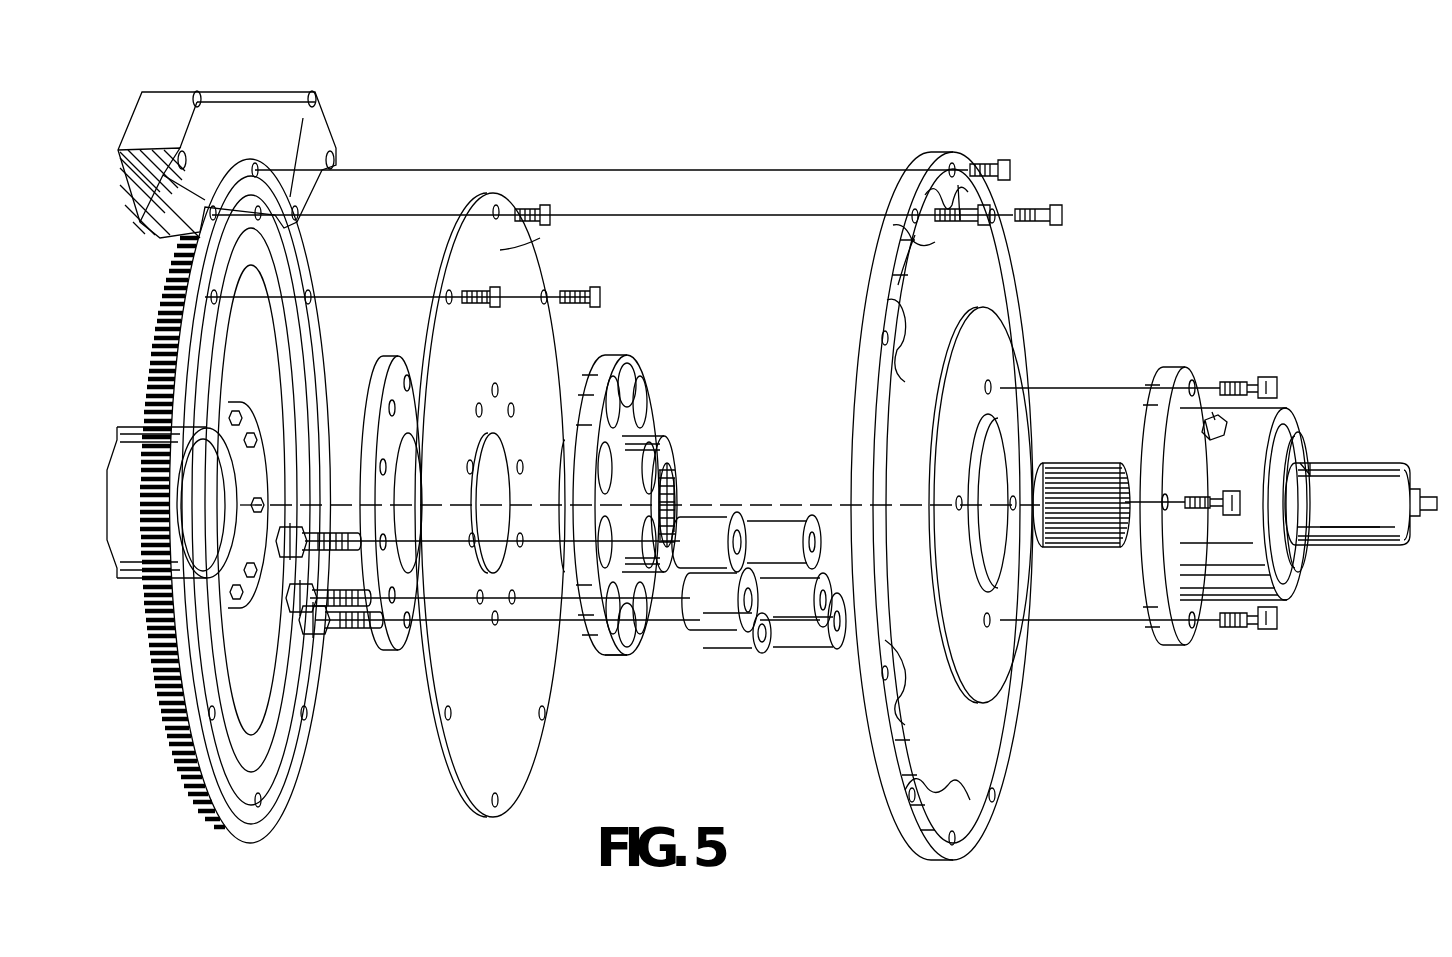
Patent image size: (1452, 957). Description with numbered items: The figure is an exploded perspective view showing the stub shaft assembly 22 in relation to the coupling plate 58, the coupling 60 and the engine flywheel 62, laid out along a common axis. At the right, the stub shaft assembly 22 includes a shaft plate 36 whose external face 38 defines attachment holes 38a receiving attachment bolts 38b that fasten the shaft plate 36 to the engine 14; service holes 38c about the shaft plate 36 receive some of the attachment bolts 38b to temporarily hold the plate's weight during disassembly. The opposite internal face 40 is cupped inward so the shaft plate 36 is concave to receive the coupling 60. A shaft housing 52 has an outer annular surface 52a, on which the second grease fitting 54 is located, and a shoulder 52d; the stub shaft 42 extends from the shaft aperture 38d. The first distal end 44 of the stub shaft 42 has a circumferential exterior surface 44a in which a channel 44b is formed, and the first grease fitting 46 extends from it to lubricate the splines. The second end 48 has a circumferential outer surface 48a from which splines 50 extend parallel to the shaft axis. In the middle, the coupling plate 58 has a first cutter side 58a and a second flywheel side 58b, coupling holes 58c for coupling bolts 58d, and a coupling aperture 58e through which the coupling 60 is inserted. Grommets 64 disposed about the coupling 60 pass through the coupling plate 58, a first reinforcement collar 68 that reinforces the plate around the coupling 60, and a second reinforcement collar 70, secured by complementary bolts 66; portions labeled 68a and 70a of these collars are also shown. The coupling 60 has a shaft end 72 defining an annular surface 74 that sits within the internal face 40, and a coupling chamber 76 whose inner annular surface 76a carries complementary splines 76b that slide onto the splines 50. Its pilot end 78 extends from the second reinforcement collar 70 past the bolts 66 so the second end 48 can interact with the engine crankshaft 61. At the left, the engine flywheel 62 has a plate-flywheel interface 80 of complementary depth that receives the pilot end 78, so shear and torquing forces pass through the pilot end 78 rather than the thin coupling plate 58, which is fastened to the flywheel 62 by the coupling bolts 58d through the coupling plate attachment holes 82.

The engine 14 is at (232, 112).
The stub shaft assembly 22 is at (1114, 484).
The shaft plate 36 is at (970, 276).
The external face 38 is at (944, 484).
The attachment holes 38a is at (955, 165).
The attachment bolts 38b is at (1000, 170).
The service holes 38c is at (888, 338).
The shaft aperture 38d is at (988, 545).
The internal face 40 is at (868, 800).
The stub shaft 42 is at (1361, 501).
The first distal end 44 is at (1361, 482).
The circumferential exterior surface 44a is at (1348, 520).
The channel 44b is at (1308, 465).
The first grease fitting 46 is at (1430, 512).
The second end 48 is at (1082, 493).
The circumferential outer surface 48a is at (1100, 450).
The splines 50 is at (1062, 465).
The shaft housing 52 is at (1245, 459).
The outer annular surface 52a is at (1235, 395).
The shoulder 52d is at (1250, 420).
The second grease fitting 54 is at (1205, 440).
The coupling plate 58 is at (470, 507).
The first cutter side 58a is at (540, 238).
The second flywheel side 58b is at (447, 775).
The coupling holes 58c is at (458, 290).
The coupling bolts 58d is at (488, 305).
The coupling aperture 58e is at (488, 547).
The coupling 60 is at (709, 508).
The engine crankshaft 61 is at (165, 440).
The engine flywheel 62 is at (235, 501).
The grommets 64 is at (803, 655).
The complementary bolts 66 is at (328, 640).
The first reinforcement collar 68 is at (633, 508).
The hub plate edge 68a is at (630, 652).
The second reinforcement collar 70 is at (383, 500).
The flange holes 70a is at (407, 628).
The shaft end 72 is at (668, 438).
The annular surface 74 is at (666, 512).
The coupling chamber 76 is at (670, 530).
The inner annular surface 76a is at (670, 490).
The complementary splines 76b is at (670, 475).
The pilot end 78 is at (562, 552).
The plate-flywheel interface 80 is at (220, 585).
The coupling plate attachment holes 82 is at (313, 297).